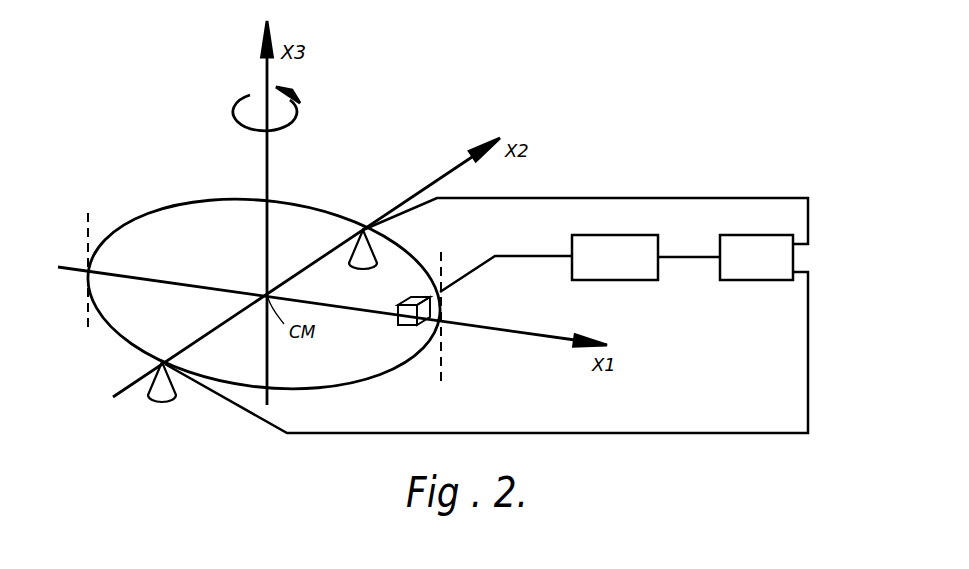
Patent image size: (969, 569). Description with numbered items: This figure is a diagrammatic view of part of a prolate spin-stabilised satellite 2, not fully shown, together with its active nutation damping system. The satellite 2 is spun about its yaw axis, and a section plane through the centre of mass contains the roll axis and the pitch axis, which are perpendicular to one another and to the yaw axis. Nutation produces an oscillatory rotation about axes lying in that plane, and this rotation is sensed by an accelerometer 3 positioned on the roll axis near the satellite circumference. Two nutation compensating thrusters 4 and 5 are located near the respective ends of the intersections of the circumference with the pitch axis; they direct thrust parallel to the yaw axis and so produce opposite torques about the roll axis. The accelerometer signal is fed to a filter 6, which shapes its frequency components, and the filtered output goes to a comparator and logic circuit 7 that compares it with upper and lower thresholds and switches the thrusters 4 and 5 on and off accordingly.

The prolate spin-stabilised satellite 2 is at (88, 214).
The accelerometer 3 is at (398, 319).
The nutation compensating thruster 4 is at (350, 250).
The nutation compensating thruster 5 is at (161, 405).
The filter 6 is at (660, 246).
The comparator and logic circuit 7 is at (770, 236).